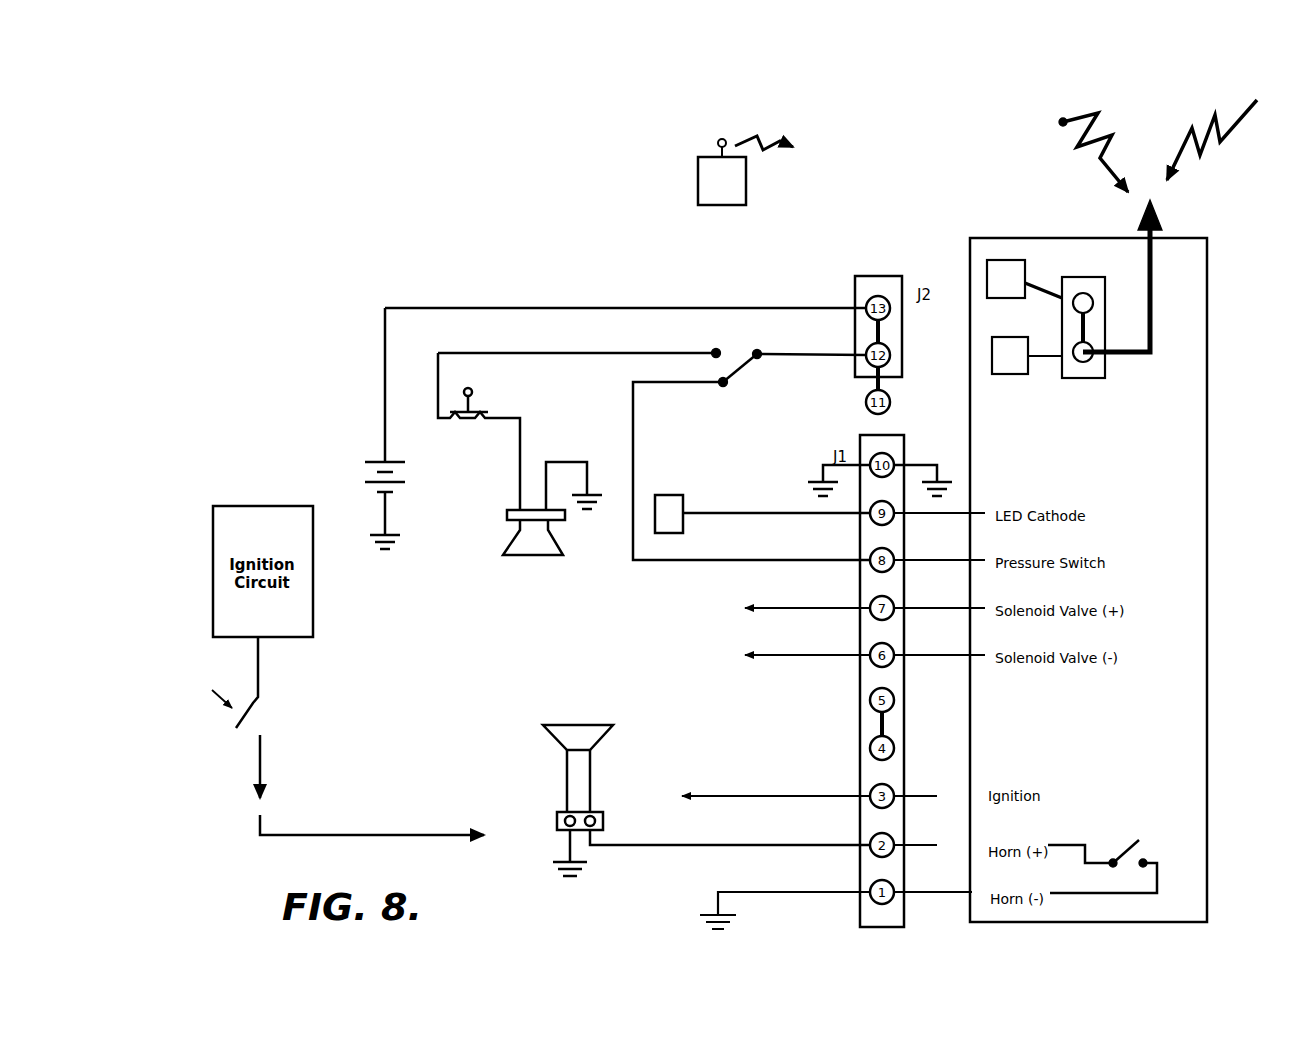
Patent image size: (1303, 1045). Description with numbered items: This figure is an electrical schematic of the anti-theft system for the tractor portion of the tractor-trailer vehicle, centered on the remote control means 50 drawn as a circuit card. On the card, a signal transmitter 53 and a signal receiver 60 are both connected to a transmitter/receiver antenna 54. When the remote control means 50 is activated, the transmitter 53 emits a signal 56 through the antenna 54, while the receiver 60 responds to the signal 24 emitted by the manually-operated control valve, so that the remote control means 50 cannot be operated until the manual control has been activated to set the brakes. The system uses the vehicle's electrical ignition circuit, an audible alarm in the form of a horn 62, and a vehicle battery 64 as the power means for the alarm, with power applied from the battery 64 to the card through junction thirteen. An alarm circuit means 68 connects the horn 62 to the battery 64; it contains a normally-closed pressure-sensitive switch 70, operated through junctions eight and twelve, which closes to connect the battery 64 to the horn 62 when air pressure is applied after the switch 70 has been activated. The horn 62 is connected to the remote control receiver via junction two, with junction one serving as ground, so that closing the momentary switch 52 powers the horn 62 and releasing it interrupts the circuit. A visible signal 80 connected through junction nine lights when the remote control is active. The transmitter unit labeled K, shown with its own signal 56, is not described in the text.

The signal emitted by manually-operated control valve 24 is at (1237, 125).
The remote control means 50 is at (1016, 214).
The electronically-operated means / switch 52 is at (1127, 836).
The signal transmitter 53 is at (1024, 279).
The transmitter/receiver antenna 54 is at (1153, 265).
The signal 56 is at (750, 135).
The signal receiver 60 is at (1027, 355).
The horn 62 is at (553, 735).
The vehicle battery 64 is at (360, 475).
The alarm circuit means 68 is at (660, 415).
The pressure-sensitive switch 70 is at (757, 381).
The visible signal 80 is at (670, 495).
The key fob transmitter K is at (712, 205).